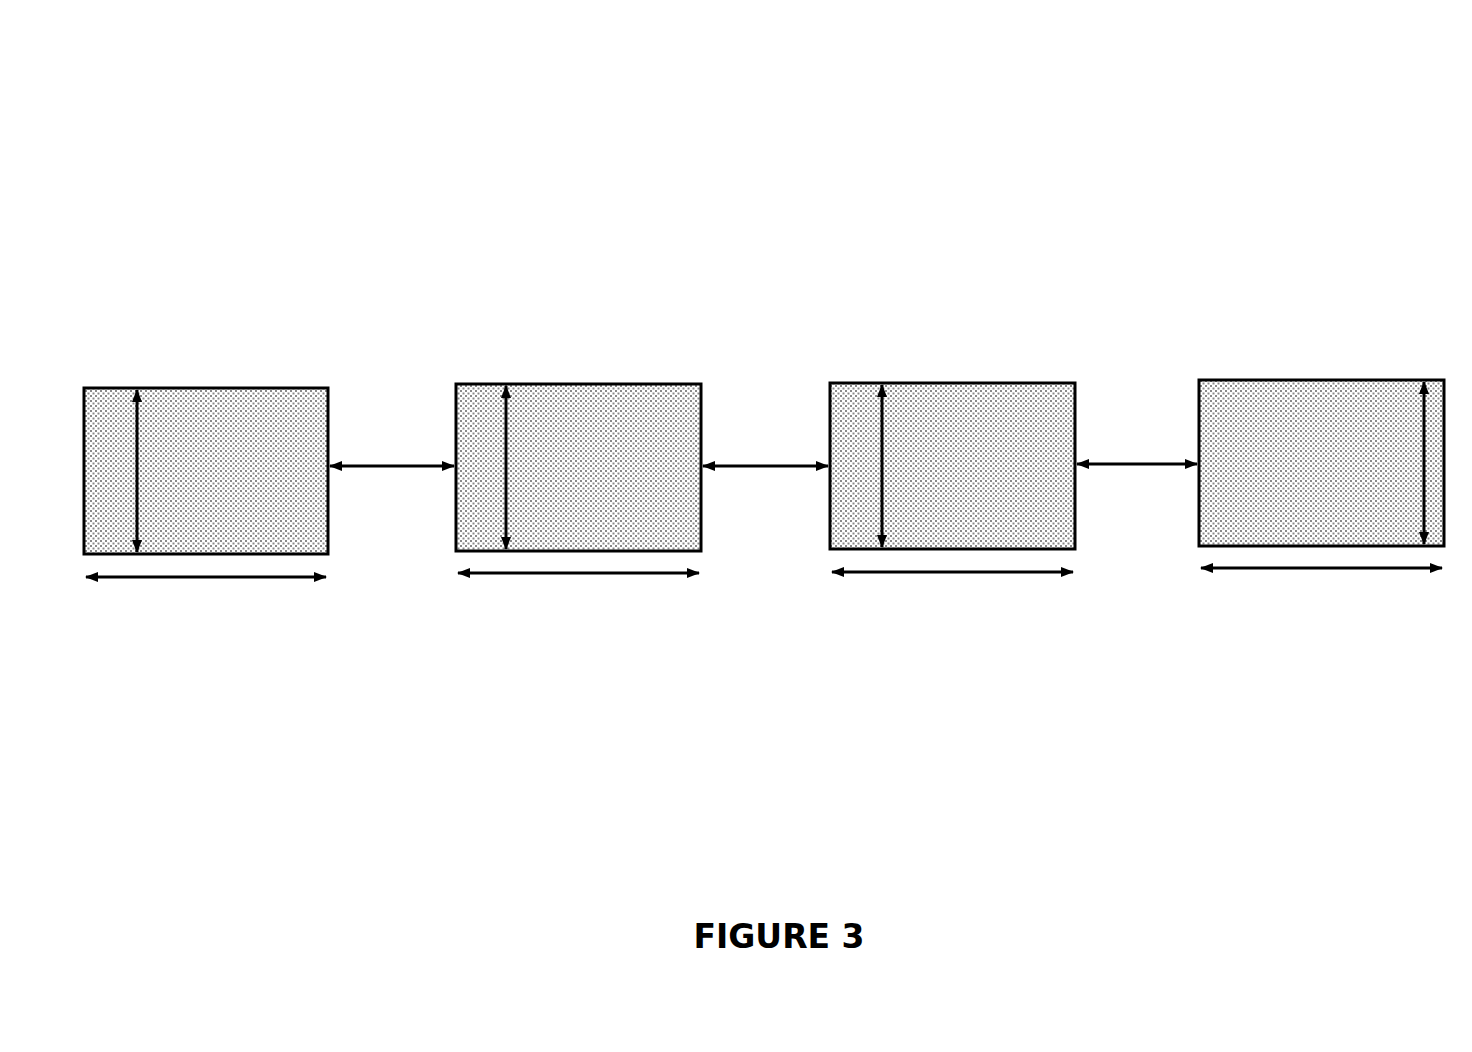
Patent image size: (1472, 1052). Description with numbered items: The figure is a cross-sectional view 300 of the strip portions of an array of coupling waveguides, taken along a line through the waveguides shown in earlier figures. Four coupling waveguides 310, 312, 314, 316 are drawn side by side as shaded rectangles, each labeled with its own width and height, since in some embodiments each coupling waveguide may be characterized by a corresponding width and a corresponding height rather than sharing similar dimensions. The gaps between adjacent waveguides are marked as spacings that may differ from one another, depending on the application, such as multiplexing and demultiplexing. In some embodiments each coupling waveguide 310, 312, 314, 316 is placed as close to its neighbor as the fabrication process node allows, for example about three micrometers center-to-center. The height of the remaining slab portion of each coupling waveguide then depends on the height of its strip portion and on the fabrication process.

The cross-sectional view 300 is at (758, 387).
The coupling waveguide 310 is at (289, 388).
The coupling waveguide 312 is at (658, 384).
The coupling waveguide 314 is at (1036, 383).
The coupling waveguide 316 is at (1323, 380).